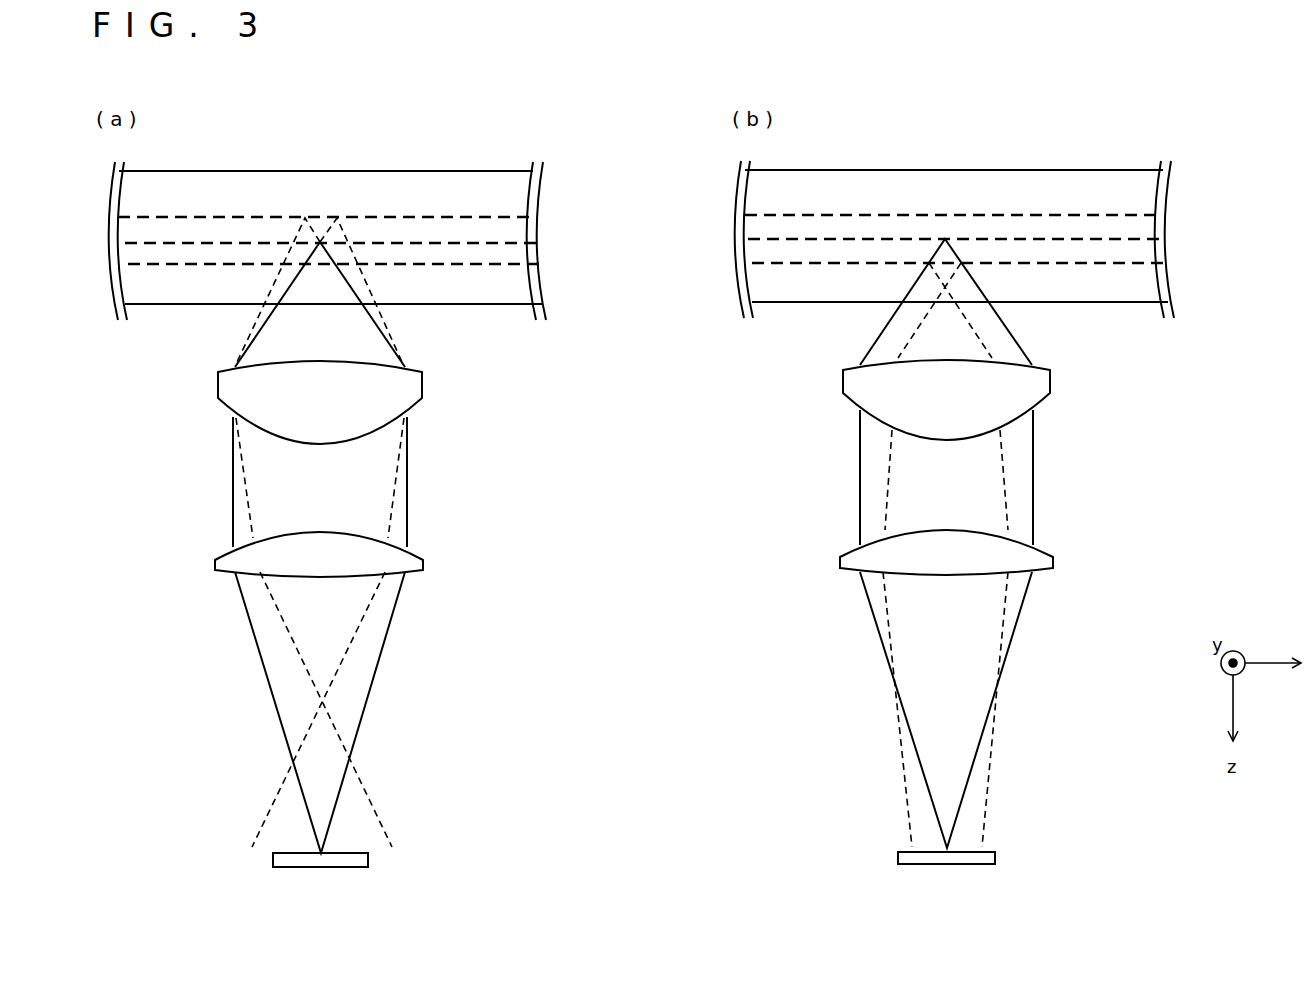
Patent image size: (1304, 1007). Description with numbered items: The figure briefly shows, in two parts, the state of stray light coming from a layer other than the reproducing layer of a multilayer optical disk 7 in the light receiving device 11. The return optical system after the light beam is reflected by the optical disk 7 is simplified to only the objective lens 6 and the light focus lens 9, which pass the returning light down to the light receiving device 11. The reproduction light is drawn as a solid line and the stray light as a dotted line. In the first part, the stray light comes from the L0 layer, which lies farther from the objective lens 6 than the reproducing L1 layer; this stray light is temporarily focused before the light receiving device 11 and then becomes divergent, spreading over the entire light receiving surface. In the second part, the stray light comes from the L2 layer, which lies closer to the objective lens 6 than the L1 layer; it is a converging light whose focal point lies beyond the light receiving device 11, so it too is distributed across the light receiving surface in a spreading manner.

The optical disk 7 is at (292, 186).
The objective lens 6 is at (417, 385).
The light focus lens 9 is at (421, 565).
The light receiving device 11 is at (368, 858).
The L0 layer L0 is at (495, 217).
The L1 layer L1 is at (495, 243).
The L2 layer L2 is at (495, 264).